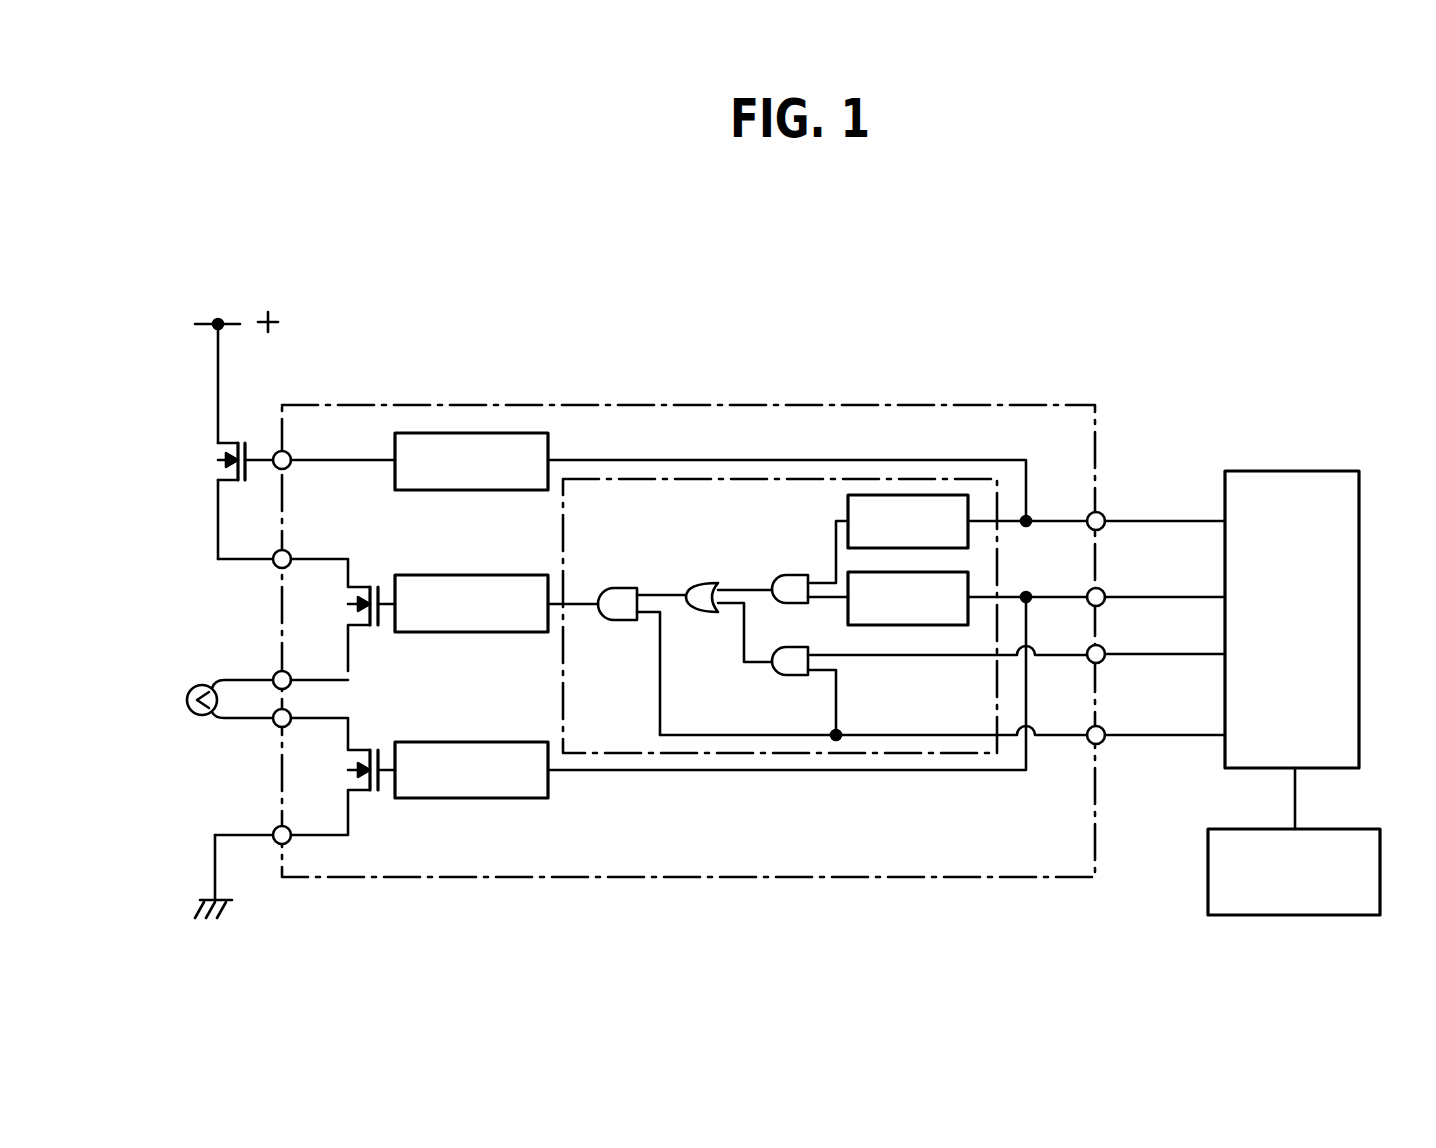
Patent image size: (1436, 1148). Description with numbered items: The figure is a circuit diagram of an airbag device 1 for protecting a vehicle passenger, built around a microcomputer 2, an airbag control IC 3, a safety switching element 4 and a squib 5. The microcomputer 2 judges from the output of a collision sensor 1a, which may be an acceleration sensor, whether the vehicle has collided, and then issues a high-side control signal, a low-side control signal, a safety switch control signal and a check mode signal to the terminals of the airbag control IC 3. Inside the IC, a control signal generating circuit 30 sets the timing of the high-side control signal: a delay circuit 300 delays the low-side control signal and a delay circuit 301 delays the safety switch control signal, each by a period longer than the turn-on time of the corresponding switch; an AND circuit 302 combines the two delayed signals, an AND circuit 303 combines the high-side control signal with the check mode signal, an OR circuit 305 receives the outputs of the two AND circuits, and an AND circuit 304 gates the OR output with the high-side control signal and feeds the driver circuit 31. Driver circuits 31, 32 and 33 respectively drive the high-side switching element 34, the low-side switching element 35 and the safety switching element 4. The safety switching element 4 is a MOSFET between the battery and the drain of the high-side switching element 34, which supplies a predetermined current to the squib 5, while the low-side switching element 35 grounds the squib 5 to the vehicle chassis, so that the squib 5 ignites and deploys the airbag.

The airbag device 1 is at (770, 290).
The collision sensor 1a is at (1351, 829).
The microcomputer 2 is at (1282, 470).
The airbag control IC 3 is at (718, 404).
The safety switching element 4 is at (217, 450).
The squib 5 is at (194, 689).
The control signal generating circuit 30 is at (775, 477).
The driver circuit 31 is at (488, 576).
The driver circuit 32 is at (486, 741).
The driver circuit 33 is at (492, 433).
The high-side switching element 34 is at (356, 588).
The low-side switching element 35 is at (353, 749).
The delay circuit 300 is at (847, 621).
The delay circuit 301 is at (847, 502).
The AND circuit 302 is at (795, 575).
The AND circuit 303 is at (770, 672).
The AND circuit 304 is at (622, 588).
The OR circuit 305 is at (707, 583).